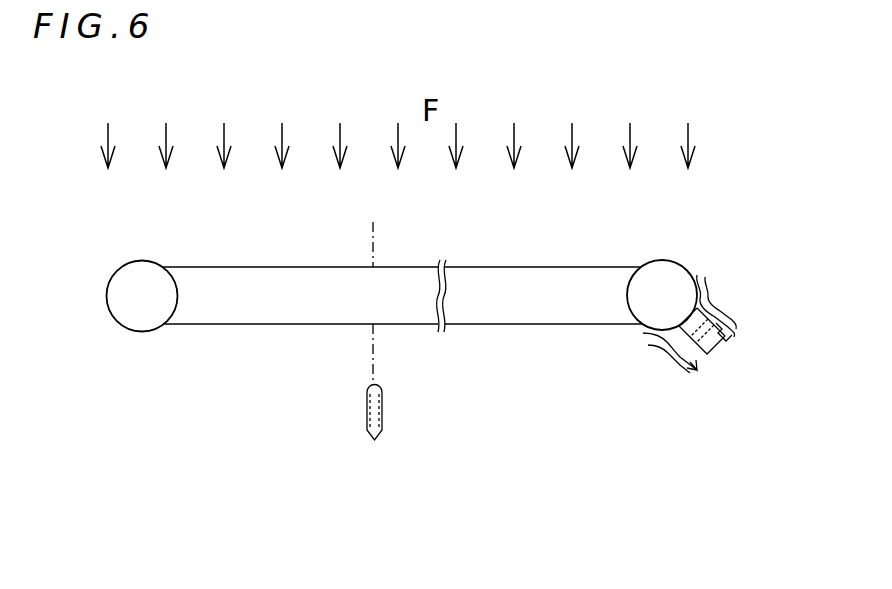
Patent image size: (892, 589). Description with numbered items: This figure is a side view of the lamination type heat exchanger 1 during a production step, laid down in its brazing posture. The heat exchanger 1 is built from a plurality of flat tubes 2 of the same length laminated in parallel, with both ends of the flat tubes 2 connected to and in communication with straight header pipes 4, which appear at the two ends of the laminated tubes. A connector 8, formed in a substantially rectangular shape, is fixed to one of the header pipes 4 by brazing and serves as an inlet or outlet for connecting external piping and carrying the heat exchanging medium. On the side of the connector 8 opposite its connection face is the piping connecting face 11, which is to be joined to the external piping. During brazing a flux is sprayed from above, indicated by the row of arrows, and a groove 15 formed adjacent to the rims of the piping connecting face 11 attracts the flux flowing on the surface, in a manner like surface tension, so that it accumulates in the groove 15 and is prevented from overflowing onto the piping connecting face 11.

The lamination type heat exchanger 1 is at (91, 246).
The flat tubes 2 is at (248, 312).
The header pipes 4 is at (123, 310).
The connector 8 is at (710, 317).
The piping connecting face 11 is at (713, 343).
The groove 15 is at (737, 337).